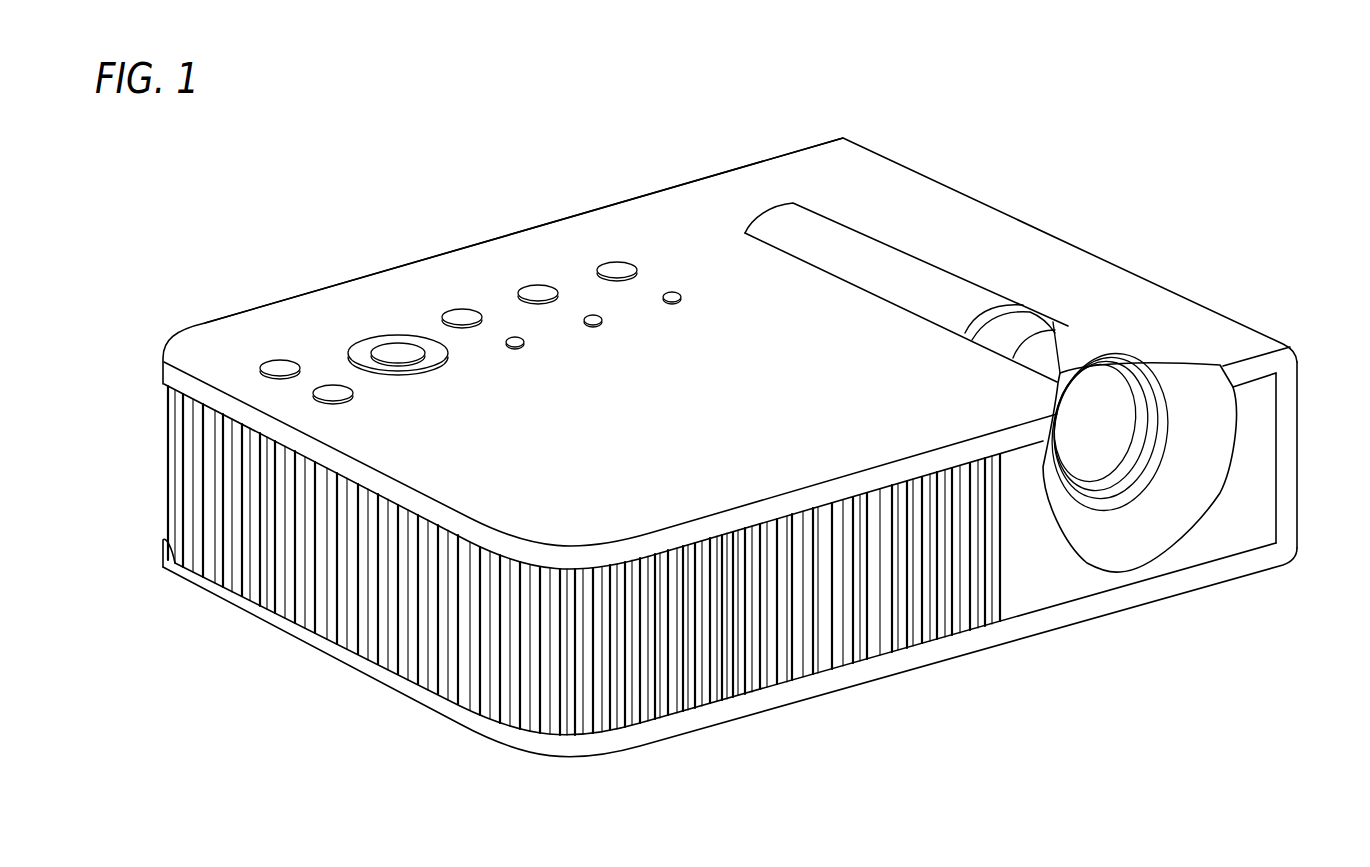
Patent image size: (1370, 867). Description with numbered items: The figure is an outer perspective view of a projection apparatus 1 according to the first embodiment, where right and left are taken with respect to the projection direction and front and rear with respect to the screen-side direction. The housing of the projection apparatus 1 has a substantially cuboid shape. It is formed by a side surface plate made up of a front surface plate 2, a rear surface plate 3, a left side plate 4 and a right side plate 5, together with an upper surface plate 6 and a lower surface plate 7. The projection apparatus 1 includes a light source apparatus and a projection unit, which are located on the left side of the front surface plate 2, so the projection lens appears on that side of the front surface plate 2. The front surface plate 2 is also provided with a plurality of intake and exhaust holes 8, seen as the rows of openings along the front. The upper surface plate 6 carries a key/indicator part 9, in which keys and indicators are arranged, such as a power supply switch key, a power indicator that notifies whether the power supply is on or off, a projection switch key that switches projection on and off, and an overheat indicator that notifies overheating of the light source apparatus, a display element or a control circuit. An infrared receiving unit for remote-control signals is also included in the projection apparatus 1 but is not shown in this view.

The projection apparatus 1 is at (527, 193).
The front surface plate 2 is at (1040, 595).
The rear surface plate 3 is at (164, 418).
The left side plate 4 is at (1300, 427).
The right side plate 5 is at (232, 578).
The upper surface plate 6 is at (495, 248).
The lower surface plate 7 is at (327, 663).
The intake and exhaust holes 8 is at (750, 677).
The key/indicator part 9 is at (395, 288).